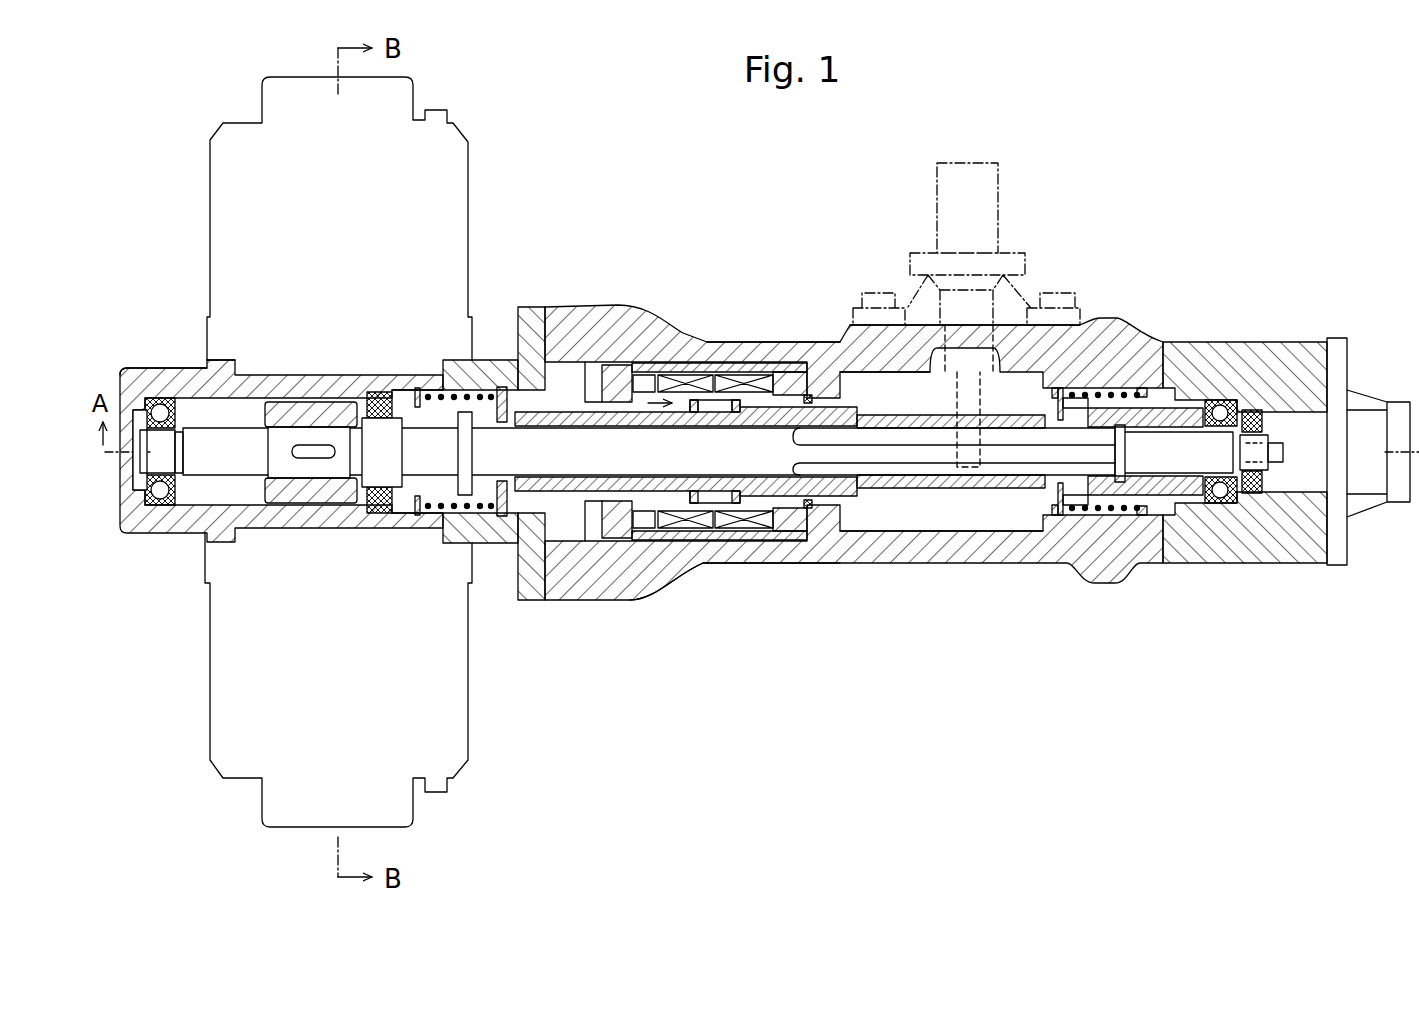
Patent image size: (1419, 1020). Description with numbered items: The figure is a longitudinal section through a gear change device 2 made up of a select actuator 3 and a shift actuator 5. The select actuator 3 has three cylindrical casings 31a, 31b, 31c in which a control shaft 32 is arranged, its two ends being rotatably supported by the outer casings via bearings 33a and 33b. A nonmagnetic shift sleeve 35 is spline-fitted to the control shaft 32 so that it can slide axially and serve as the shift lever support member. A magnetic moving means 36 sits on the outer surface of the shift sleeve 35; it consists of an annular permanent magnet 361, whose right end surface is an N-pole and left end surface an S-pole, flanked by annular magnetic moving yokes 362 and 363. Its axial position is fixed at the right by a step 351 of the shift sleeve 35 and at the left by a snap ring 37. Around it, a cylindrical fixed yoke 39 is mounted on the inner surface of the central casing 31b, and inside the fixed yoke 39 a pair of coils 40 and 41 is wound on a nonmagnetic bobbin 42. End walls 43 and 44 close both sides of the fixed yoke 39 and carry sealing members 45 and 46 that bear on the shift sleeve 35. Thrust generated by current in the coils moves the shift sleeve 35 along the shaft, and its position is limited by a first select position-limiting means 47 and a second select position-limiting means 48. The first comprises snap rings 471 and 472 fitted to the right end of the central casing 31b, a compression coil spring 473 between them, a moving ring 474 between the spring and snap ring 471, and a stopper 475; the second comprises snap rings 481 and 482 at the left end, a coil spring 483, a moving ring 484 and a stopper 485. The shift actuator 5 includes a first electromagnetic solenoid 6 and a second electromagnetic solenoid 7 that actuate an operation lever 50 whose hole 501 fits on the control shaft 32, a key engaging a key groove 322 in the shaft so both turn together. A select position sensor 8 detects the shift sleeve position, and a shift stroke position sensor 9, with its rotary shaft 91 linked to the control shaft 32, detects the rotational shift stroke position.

The gear change device 2 is at (545, 245).
The select actuator 3 is at (757, 338).
The shift actuator 5 is at (483, 97).
The first electromagnetic solenoid 6 is at (190, 713).
The second electromagnetic solenoid 7 is at (178, 272).
The select position sensor 8 is at (935, 205).
The shift stroke position sensor 9 is at (1365, 395).
The casing 31a is at (152, 368).
The central casing 31b is at (900, 325).
The casing 31c is at (1280, 342).
The control shaft 32 is at (472, 412).
The bearing 33a is at (160, 508).
The bearing 33b is at (1220, 400).
The shift sleeve 35 is at (883, 490).
The step 351 is at (757, 400).
The magnetic moving means 36 is at (620, 412).
The annular permanent magnet 361 is at (715, 425).
The moving yoke 362 is at (735, 425).
The moving yoke 363 is at (700, 420).
The snap ring 37 is at (640, 440).
The fixed yoke 39 is at (697, 342).
The coil 40 is at (735, 563).
The coil 41 is at (690, 563).
The bobbin 42 is at (650, 385).
The end wall 43 is at (820, 395).
The end wall 44 is at (590, 370).
The sealing member 45 is at (830, 380).
The sealing member 46 is at (597, 426).
The first select position-limiting means 47 is at (1060, 388).
The snap ring 471 is at (1055, 518).
The snap ring 472 is at (1145, 513).
The compression coil spring 473 is at (1130, 515).
The moving ring 474 is at (1080, 515).
The stopper 475 is at (1082, 388).
The second select position-limiting means 48 is at (480, 466).
The snap ring 481 is at (560, 520).
The snap ring 482 is at (415, 518).
The coil spring 483 is at (440, 388).
The moving ring 484 is at (497, 535).
The stopper 485 is at (482, 412).
The operation lever 50 is at (330, 495).
The hole 501 is at (341, 373).
The key groove 322 is at (313, 446).
The rotary shaft 91 is at (1275, 475).